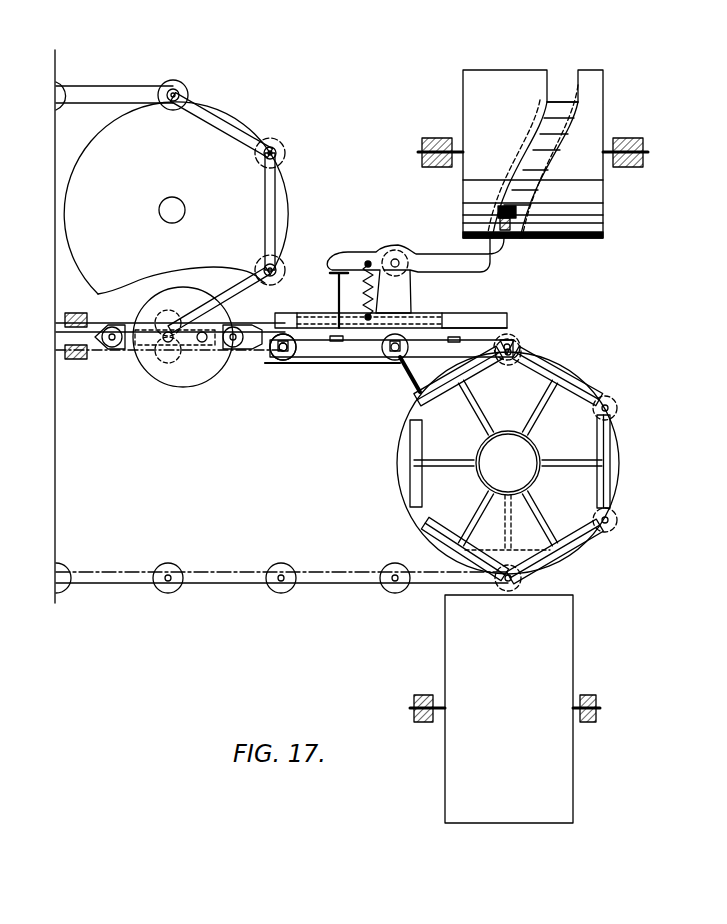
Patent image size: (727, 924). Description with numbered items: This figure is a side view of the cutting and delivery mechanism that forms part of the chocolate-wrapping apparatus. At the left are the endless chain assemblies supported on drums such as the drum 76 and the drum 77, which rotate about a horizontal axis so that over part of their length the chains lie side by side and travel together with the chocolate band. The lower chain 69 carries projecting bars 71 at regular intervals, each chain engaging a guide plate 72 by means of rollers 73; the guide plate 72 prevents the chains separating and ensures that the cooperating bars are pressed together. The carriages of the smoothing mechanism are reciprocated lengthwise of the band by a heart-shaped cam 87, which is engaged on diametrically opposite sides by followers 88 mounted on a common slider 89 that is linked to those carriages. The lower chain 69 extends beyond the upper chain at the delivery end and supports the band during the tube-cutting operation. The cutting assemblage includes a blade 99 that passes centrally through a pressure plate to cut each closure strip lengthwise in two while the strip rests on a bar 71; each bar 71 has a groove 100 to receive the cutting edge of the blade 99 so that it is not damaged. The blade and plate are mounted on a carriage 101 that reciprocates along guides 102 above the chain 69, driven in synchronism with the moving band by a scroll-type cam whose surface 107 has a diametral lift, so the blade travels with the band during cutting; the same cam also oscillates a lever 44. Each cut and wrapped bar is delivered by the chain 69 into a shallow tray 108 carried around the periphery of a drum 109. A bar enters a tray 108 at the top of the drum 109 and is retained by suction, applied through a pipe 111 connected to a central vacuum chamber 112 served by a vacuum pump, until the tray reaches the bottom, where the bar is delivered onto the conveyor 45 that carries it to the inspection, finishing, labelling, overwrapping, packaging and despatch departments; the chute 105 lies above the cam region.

The lever arm 44 is at (396, 246).
The conveyor 45 is at (568, 641).
The lower endless chain 69 is at (317, 358).
The projecting bar 71 is at (272, 352).
The guide plate 72 is at (355, 364).
The roller 73 is at (280, 361).
The drum 76 is at (232, 118).
The drum 77 is at (423, 515).
The heart-shaped cam 87 is at (172, 385).
The follower 88 is at (112, 350).
The slider 89 is at (90, 355).
The blade 99 is at (336, 286).
The groove 100 is at (455, 336).
The carriage 101 is at (420, 313).
The guides 102 is at (504, 318).
The chute 105 is at (538, 196).
The lift surface 107 is at (561, 87).
The tray 108 is at (568, 385).
The drum 109 is at (398, 465).
The pipe 111 is at (478, 417).
The central vacuum chamber 112 is at (482, 488).